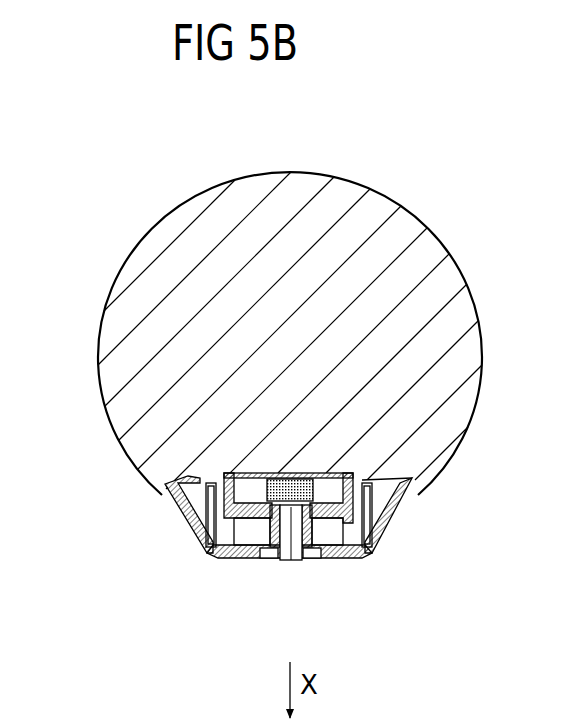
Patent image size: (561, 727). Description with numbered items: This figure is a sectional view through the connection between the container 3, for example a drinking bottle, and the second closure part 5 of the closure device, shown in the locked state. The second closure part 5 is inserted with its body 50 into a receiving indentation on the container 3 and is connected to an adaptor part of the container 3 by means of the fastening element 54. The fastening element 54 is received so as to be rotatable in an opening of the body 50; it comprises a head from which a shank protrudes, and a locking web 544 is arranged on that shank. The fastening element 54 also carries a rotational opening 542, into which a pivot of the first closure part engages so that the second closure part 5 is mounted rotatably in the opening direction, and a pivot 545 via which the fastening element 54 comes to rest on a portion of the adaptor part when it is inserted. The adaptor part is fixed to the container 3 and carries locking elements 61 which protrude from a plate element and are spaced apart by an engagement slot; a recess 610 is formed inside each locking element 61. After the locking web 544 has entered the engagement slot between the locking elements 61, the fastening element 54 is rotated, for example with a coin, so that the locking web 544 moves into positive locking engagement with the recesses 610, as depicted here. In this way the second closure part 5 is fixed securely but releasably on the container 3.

The container 3 is at (472, 300).
The second closure part 5 is at (322, 515).
The body 50 is at (372, 553).
The fastening element 54 is at (250, 558).
The locking elements 61 is at (202, 532).
The rotational opening 542 is at (291, 562).
The locking web 544 is at (335, 560).
The pivot 545 is at (320, 483).
The recess 610 is at (200, 505).